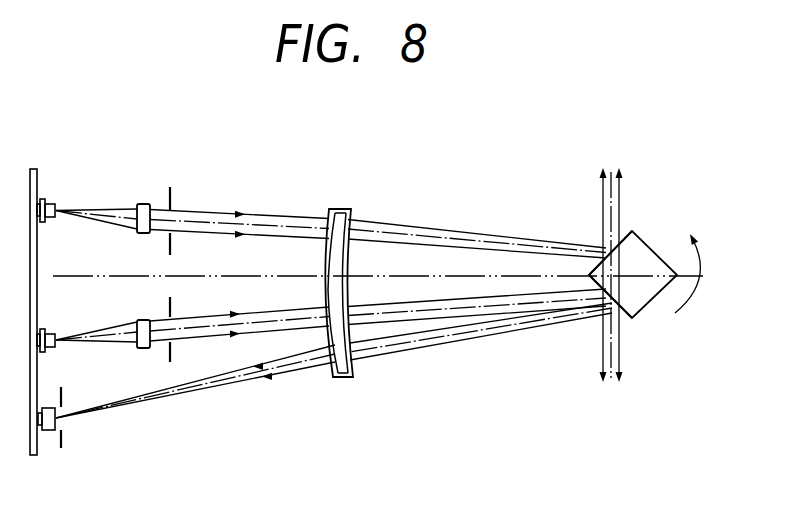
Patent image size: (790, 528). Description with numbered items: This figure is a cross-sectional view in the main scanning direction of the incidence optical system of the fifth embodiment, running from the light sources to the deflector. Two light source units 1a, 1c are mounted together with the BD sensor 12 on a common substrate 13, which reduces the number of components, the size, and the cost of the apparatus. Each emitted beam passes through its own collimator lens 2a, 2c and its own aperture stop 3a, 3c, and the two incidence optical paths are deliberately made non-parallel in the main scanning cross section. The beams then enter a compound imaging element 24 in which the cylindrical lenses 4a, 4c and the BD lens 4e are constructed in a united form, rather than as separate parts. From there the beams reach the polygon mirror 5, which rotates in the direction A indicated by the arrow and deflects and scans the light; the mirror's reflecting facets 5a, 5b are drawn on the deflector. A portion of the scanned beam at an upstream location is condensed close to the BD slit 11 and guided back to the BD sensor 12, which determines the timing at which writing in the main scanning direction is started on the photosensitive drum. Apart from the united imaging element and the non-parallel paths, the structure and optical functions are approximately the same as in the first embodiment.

The common substrate 13 is at (33, 168).
The light source unit 1c is at (54, 211).
The light source unit 1a is at (56, 344).
The collimator lens 2c is at (143, 204).
The collimator lens 2a is at (144, 350).
The aperture stop 3c is at (171, 193).
The aperture stop 3a is at (172, 355).
The compound imaging element 24 is at (343, 209).
The cylindrical lens 4c is at (333, 222).
The cylindrical lens 4a is at (337, 322).
The BD lens 4e is at (343, 376).
The BD slit 11 is at (62, 438).
The BD sensor 12 is at (49, 431).
The polygon mirror 5 is at (644, 289).
The reflecting surface 5b is at (625, 229).
The reflecting surface 5a is at (625, 319).
The rotation direction A is at (702, 273).